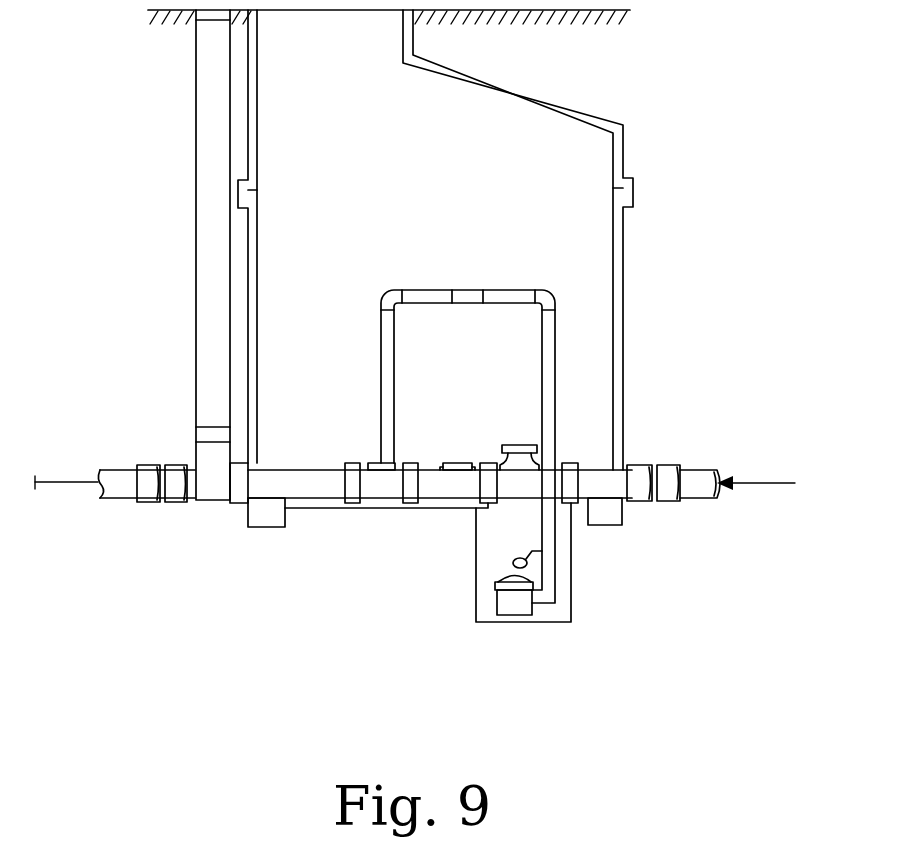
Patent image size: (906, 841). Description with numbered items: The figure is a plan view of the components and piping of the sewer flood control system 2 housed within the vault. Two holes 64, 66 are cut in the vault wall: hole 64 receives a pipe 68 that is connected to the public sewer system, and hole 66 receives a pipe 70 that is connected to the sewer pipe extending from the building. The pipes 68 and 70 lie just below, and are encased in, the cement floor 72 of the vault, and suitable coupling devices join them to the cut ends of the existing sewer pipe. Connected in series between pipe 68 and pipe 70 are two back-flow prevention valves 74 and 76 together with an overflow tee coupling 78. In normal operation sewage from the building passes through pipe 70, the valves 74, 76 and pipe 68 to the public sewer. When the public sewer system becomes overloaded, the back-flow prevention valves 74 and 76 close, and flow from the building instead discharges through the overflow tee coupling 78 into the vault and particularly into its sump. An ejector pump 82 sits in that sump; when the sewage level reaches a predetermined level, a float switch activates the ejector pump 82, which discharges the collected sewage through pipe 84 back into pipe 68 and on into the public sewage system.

The plumbing system 2 is at (648, 235).
The hole 64 is at (258, 470).
The hole 66 is at (627, 463).
The pipe 68 is at (318, 490).
The pipe 70 is at (608, 488).
The cement floor 72 is at (375, 505).
The back-flow prevention valve 74 is at (380, 462).
The back-flow prevention valve 76 is at (452, 462).
The overflow tee coupling 78 is at (518, 443).
The ejector pump 82 is at (518, 607).
The pipe 84 is at (424, 290).